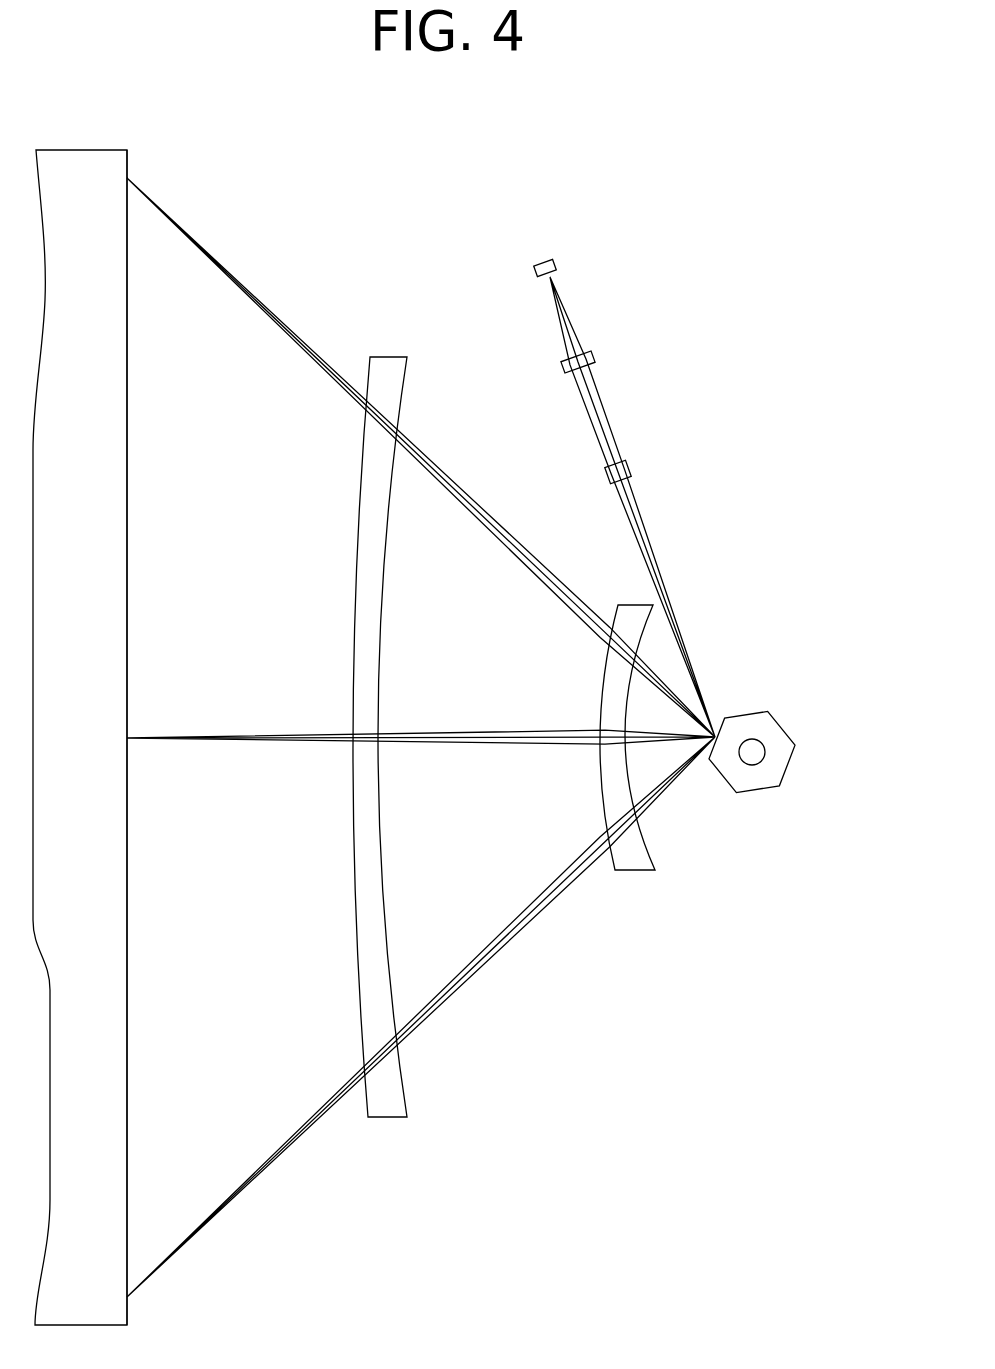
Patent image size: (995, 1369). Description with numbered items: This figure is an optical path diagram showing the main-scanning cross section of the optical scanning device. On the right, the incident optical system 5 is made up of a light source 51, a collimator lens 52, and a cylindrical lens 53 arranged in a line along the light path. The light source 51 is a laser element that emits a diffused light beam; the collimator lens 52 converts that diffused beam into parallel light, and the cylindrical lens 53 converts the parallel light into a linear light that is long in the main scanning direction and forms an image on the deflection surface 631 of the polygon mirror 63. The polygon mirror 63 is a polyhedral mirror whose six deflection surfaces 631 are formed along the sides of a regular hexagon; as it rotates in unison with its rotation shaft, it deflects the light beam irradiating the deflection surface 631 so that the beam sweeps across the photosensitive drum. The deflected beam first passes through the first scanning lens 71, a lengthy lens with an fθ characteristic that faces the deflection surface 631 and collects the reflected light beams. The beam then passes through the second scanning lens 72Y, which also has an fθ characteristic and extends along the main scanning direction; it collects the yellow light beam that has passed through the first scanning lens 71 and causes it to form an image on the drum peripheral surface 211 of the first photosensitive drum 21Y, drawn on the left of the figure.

The first photosensitive drum 21Y is at (68, 153).
The drum peripheral surface 211 is at (128, 944).
The incident optical system 5 is at (628, 469).
The light source 51 is at (555, 262).
The collimator lens 52 is at (595, 355).
The cylindrical lens 53 is at (659, 455).
The polygon mirror 63 is at (770, 718).
The deflection surface 631 is at (790, 772).
The first scanning lens 71 is at (632, 860).
The second scanning lens 72Y is at (385, 1105).